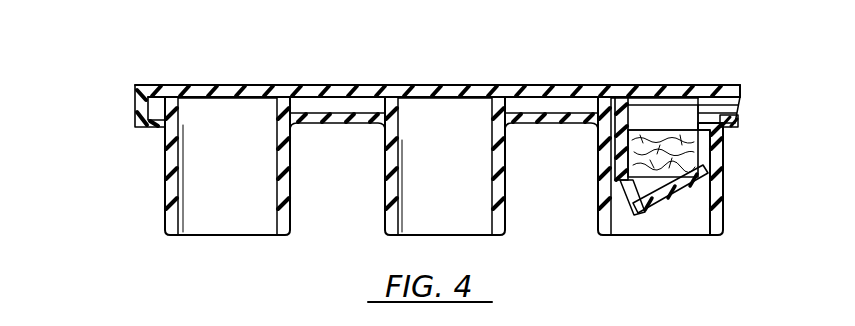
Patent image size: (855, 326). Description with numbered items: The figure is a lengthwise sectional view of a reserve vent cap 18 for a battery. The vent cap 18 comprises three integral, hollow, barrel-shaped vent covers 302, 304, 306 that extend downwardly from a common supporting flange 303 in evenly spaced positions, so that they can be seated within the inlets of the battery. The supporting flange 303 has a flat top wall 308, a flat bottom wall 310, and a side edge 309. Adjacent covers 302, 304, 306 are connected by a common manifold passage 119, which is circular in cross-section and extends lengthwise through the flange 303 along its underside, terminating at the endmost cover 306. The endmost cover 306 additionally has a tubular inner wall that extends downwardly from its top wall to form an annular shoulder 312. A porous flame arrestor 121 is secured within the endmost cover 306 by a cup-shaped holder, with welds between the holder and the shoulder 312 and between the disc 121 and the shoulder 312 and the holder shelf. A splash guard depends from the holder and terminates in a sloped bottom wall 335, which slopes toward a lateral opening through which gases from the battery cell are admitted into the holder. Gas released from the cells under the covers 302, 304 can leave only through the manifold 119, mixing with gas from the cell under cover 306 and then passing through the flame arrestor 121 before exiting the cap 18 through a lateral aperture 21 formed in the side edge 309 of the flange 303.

The vent cap 18 is at (105, 99).
The manifold passage 119 is at (318, 105).
The supporting flange 303 is at (370, 85).
The top wall 308 is at (558, 85).
The annular shoulder 312 is at (637, 108).
The side edge 309 is at (740, 90).
The aperture 21 is at (738, 106).
The flame arrestor 121 is at (698, 152).
The vent cover 302 is at (163, 225).
The vent cover 304 is at (382, 228).
The vent cover 306 is at (598, 228).
The bottom wall 310 is at (573, 118).
The sloped bottom wall 335 is at (672, 185).